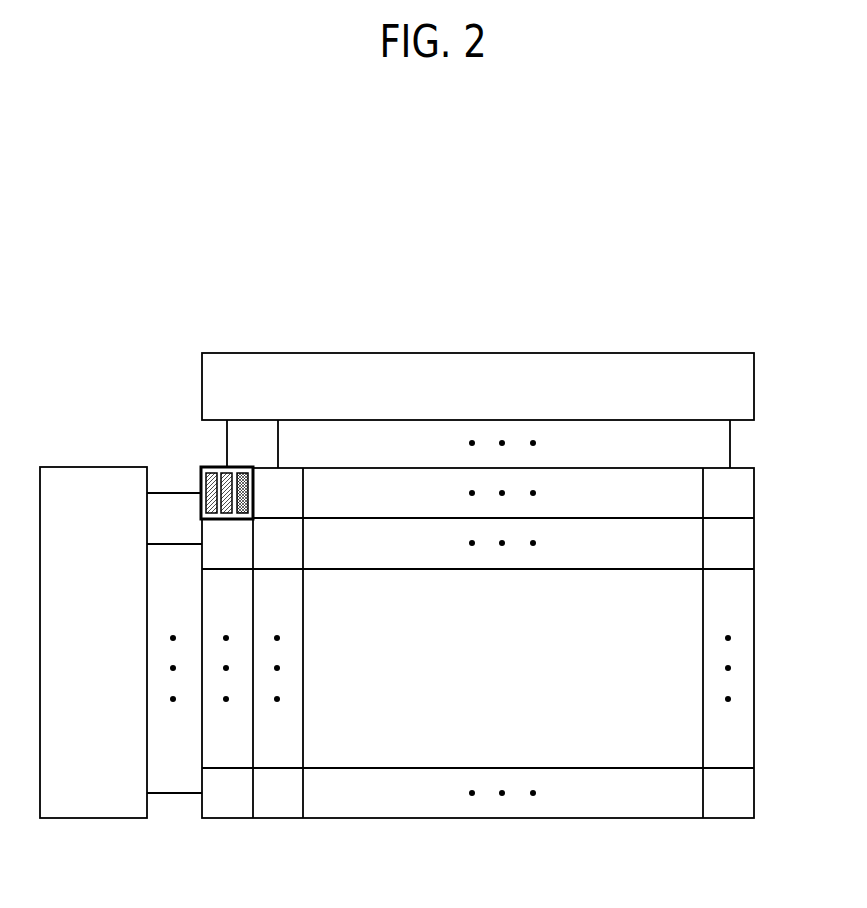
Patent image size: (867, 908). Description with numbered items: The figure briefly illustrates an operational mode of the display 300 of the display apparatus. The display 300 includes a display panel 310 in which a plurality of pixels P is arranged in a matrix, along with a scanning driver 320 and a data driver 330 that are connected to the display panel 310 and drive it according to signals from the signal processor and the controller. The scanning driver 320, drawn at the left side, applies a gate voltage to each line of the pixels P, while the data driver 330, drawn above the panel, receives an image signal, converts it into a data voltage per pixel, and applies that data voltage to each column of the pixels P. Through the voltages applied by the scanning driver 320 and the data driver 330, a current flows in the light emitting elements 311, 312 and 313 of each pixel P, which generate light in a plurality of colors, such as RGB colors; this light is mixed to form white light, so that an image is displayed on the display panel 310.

The display 300 is at (736, 300).
The display panel 310 is at (623, 820).
The scanning driver 320 is at (93, 820).
The data driver 330 is at (477, 352).
The pixel P is at (200, 480).
The light emitting element 311 is at (203, 474).
The light emitting element 312 is at (226, 474).
The light emitting element 313 is at (242, 474).